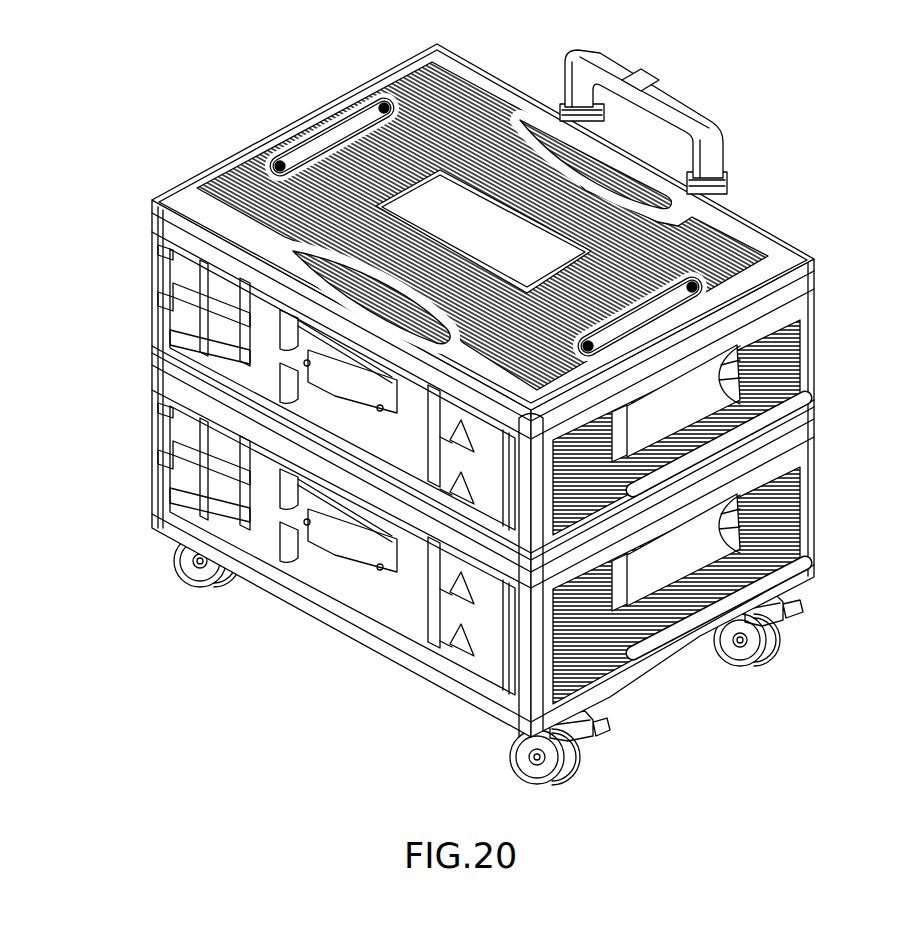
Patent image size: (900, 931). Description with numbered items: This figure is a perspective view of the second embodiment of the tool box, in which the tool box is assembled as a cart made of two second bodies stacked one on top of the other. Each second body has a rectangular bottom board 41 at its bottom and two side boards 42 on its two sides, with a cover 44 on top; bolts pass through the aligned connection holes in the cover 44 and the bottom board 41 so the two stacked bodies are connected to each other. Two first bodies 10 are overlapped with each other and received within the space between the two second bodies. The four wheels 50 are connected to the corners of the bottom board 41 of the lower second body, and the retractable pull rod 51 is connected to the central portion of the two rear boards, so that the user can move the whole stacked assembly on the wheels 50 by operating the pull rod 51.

The first body 10 is at (480, 390).
The bottom board 41 is at (165, 350).
The side board 42 is at (158, 260).
The cover 44 is at (247, 147).
The wheel 50 is at (575, 773).
The pull rod 51 is at (708, 150).